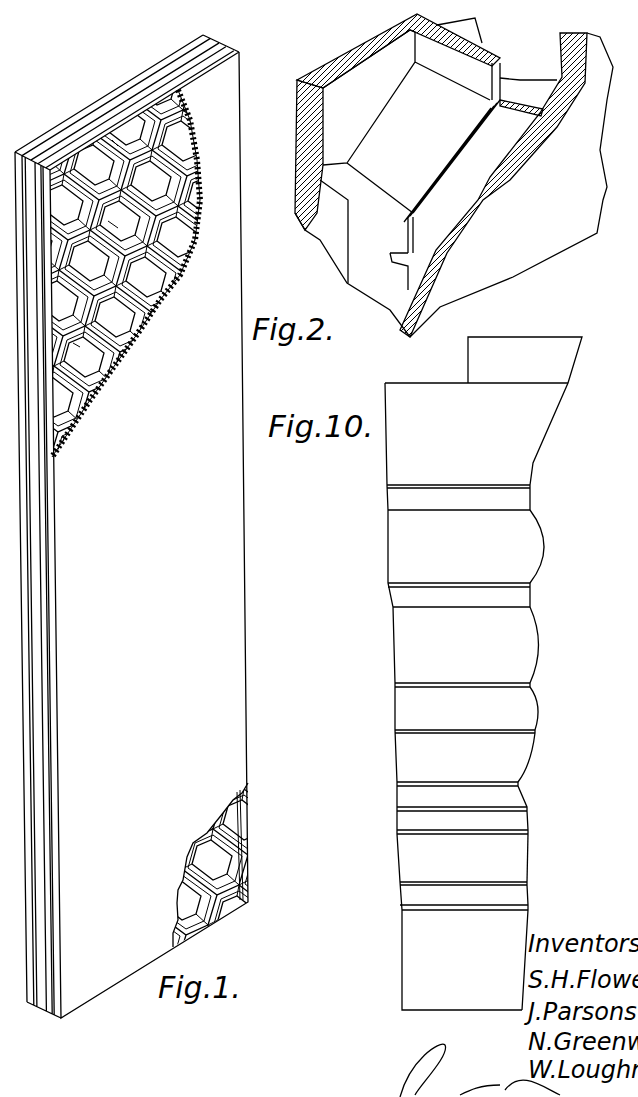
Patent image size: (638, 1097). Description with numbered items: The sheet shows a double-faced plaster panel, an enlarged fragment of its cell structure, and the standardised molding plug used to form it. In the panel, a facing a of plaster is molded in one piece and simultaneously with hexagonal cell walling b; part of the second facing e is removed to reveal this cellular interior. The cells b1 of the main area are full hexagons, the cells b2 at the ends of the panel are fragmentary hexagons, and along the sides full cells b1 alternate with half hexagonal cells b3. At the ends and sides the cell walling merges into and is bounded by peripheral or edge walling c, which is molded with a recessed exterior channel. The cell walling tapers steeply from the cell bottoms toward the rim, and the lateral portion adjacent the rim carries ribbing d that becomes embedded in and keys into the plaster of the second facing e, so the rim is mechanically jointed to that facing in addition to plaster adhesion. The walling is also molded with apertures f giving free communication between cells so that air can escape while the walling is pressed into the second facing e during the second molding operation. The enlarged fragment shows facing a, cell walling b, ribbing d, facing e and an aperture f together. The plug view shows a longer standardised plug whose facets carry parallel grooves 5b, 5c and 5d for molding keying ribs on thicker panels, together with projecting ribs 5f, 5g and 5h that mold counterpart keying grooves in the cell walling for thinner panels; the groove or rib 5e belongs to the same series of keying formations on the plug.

In FIG. 1, the facing a is at (138, 68).
In FIG. 2, the facing a is at (350, 50).
In FIG. 1, the hexagonal cell walling b is at (197, 167).
In FIG. 2, the hexagonal cell walling b is at (457, 67).
In FIG. 1, the full hexagonal cell b1 is at (110, 223).
In FIG. 2, the full hexagonal cell b1 is at (460, 182).
In FIG. 1, the fragmentary hexagonal cell b2 is at (110, 143).
In FIG. 1, the half hexagonal cell b3 is at (75, 345).
In FIG. 1, the peripheral or edge walling c is at (40, 680).
In FIG. 1, the ribbing d is at (150, 277).
In FIG. 2, the ribbing d is at (547, 107).
In FIG. 1, the second facing e is at (152, 585).
In FIG. 2, the second facing e is at (538, 135).
In FIG. 2, the aperture f is at (407, 267).
In FIG. 10, the groove 5d is at (387, 497).
In FIG. 10, the groove 5c is at (390, 593).
In FIG. 10, the groove 5b is at (393, 686).
In FIG. 10, the rib 5h is at (392, 735).
In FIG. 10, the rib 5g is at (395, 810).
In FIG. 10, the rib 5f is at (397, 834).
In FIG. 10, the moulding section e 5e is at (398, 906).